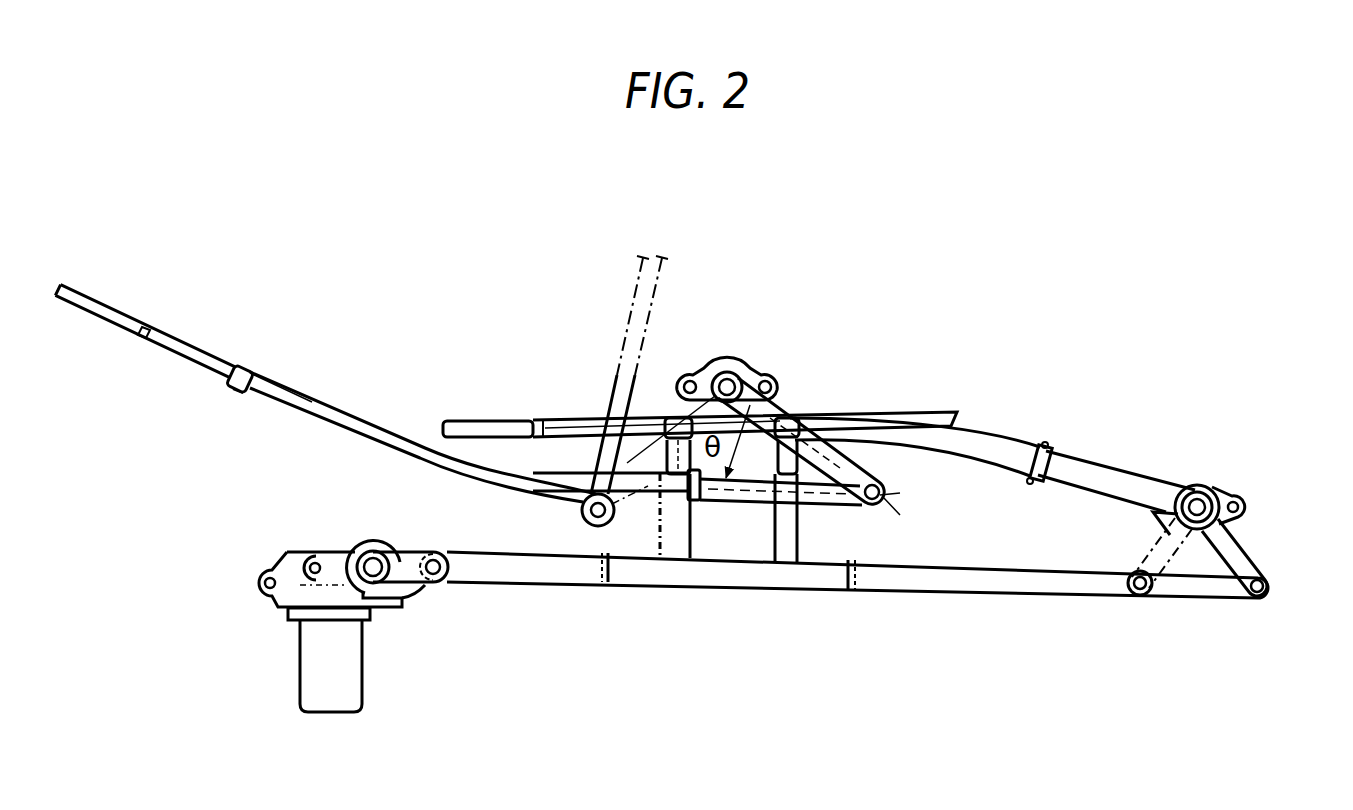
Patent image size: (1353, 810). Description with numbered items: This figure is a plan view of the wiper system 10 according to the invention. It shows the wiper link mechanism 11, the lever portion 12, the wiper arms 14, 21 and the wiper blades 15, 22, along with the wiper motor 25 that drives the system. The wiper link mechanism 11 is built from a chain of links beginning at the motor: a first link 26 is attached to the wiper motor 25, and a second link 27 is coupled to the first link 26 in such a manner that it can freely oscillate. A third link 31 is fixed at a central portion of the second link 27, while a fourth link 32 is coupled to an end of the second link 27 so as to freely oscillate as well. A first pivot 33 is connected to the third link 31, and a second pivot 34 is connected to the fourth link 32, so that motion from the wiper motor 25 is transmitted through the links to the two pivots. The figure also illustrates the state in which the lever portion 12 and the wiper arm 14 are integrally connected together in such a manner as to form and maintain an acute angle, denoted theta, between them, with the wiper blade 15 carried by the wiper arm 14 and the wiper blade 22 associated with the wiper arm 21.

The wiper system 10 is at (428, 286).
The wiper link mechanism 11 is at (450, 518).
The lever portion 12 is at (793, 392).
The wiper arm 14 is at (660, 298).
The wiper blade 15 is at (203, 350).
The wiper arm 21 is at (1113, 465).
The wiper blade 22 is at (494, 420).
The wiper motor 25 is at (285, 688).
The first link 26 is at (417, 588).
The second link 27 is at (578, 584).
The third link 31 is at (800, 540).
The fourth link 32 is at (1250, 545).
The first pivot 33 is at (754, 356).
The second pivot 34 is at (1210, 468).